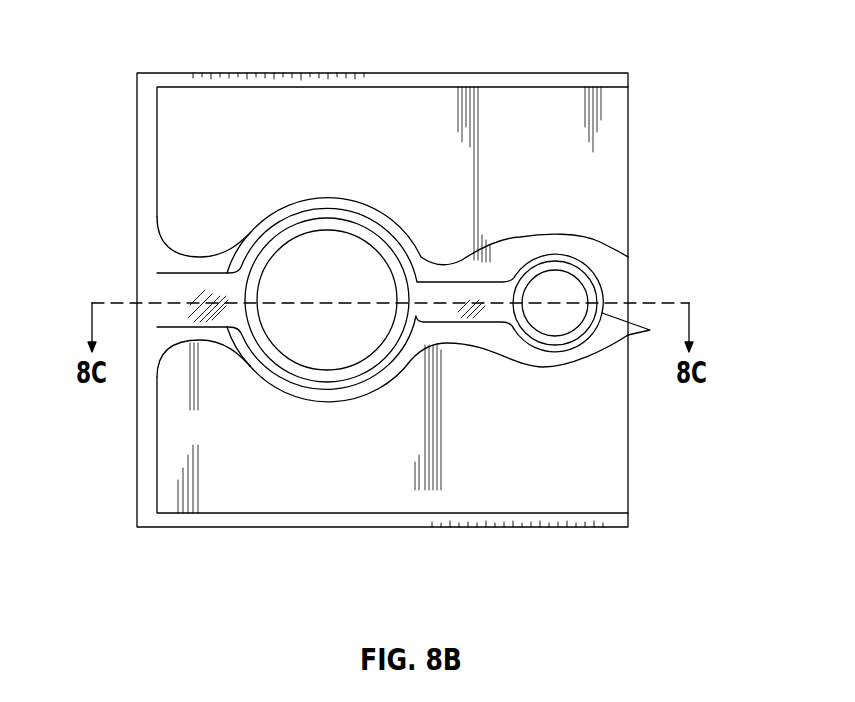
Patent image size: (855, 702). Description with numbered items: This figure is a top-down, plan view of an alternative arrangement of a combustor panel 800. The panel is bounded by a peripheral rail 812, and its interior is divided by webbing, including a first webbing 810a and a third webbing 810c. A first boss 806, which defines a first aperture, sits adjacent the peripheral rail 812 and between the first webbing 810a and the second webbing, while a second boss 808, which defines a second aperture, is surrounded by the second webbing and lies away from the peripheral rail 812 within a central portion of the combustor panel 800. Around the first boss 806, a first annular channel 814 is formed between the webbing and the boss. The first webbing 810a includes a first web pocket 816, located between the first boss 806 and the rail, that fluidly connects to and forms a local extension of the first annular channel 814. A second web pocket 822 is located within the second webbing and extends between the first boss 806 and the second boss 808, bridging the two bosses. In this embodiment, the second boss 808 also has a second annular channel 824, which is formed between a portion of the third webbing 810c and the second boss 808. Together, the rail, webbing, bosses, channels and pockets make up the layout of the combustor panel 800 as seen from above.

The combustor panel 800 is at (663, 47).
The first boss 806 is at (311, 228).
The second boss 808 is at (546, 263).
The first webbing 810a is at (201, 342).
The third webbing 810c is at (336, 198).
The peripheral rail 812 is at (142, 398).
The first annular channel 814 is at (352, 384).
The first web pocket 816 is at (208, 283).
The second web pocket 822 is at (455, 283).
The second annular channel 824 is at (567, 352).